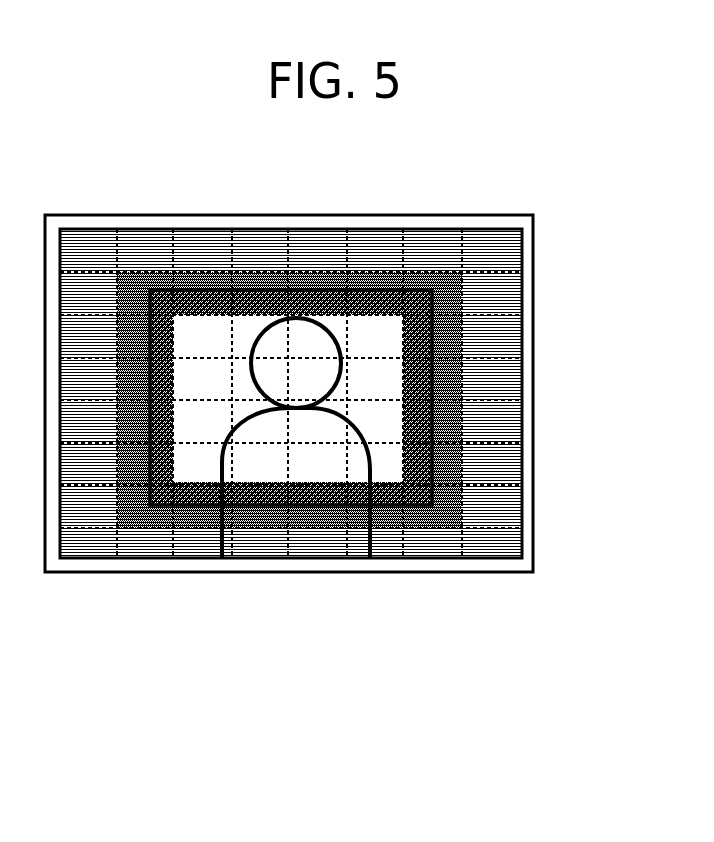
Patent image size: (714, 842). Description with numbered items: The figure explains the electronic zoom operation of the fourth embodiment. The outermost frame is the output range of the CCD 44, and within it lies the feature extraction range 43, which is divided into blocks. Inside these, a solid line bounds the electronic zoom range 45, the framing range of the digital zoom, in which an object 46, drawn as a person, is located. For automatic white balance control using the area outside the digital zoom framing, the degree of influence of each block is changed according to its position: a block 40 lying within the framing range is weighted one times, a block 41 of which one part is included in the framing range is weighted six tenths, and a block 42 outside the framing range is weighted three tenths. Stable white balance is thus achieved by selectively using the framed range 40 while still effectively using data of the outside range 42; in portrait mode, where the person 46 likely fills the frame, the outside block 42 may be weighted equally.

The block within the framing range 40 is at (368, 323).
The block partly included in the framing range 41 is at (450, 285).
The block outside the framing range 42 is at (510, 517).
The feature extraction range 43 is at (520, 372).
The output range of the CCD 44 is at (533, 262).
The electronic zoom range 45 is at (433, 473).
The object 46 is at (353, 465).